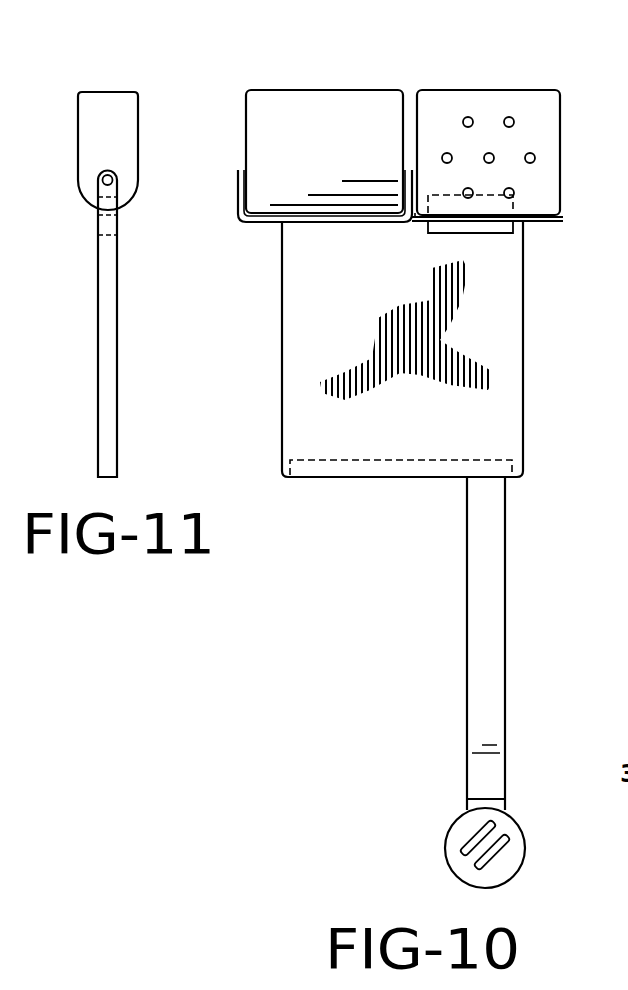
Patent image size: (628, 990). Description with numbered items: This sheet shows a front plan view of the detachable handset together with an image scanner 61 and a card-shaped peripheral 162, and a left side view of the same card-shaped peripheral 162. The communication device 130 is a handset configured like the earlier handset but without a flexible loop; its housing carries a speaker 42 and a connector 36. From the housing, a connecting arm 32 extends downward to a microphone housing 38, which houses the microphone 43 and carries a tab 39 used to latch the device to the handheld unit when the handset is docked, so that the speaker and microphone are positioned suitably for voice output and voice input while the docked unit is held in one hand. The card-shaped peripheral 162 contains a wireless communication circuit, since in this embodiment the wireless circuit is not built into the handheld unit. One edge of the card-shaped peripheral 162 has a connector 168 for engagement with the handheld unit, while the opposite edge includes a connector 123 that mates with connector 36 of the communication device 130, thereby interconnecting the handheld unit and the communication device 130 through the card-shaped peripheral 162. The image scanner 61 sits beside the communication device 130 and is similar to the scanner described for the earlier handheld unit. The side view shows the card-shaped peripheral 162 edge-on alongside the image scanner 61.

In FIG. 10, the image scanner 61 is at (318, 122).
In FIG. 11, the image scanner 61 is at (104, 122).
In FIG. 10, the communication device 130 is at (551, 86).
In FIG. 10, the speaker 42 is at (506, 118).
In FIG. 10, the connector 36 is at (492, 207).
In FIG. 10, the connector 123 is at (497, 230).
In FIG. 10, the card-shaped peripheral 162 is at (507, 430).
In FIG. 11, the card-shaped peripheral 162 is at (106, 342).
In FIG. 10, the connector 168 is at (405, 480).
In FIG. 10, the connecting arm 32 is at (485, 626).
In FIG. 10, the tab 39 is at (478, 800).
In FIG. 10, the microphone 43 is at (466, 848).
In FIG. 10, the microphone housing 38 is at (512, 868).